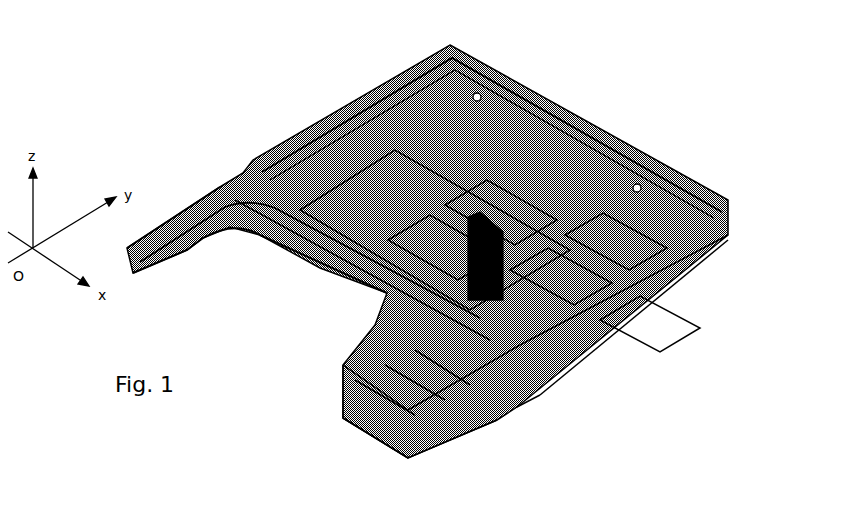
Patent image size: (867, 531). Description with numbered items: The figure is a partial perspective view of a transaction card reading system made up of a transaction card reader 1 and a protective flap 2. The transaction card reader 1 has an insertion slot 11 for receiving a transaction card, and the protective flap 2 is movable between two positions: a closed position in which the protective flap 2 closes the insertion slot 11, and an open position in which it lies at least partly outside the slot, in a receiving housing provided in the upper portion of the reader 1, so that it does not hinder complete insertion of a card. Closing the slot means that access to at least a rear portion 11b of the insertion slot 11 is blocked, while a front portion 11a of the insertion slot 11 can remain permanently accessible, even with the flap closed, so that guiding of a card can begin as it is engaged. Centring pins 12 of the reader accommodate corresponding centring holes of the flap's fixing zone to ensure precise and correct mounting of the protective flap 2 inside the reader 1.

The transaction card reader 1 is at (444, 258).
The protective flap 2 is at (533, 130).
The insertion slot 11 is at (323, 265).
The front portion of the insertion slot 11a is at (571, 403).
The rear portion of the insertion slot 11b is at (762, 250).
The centring pins 12 is at (483, 73).